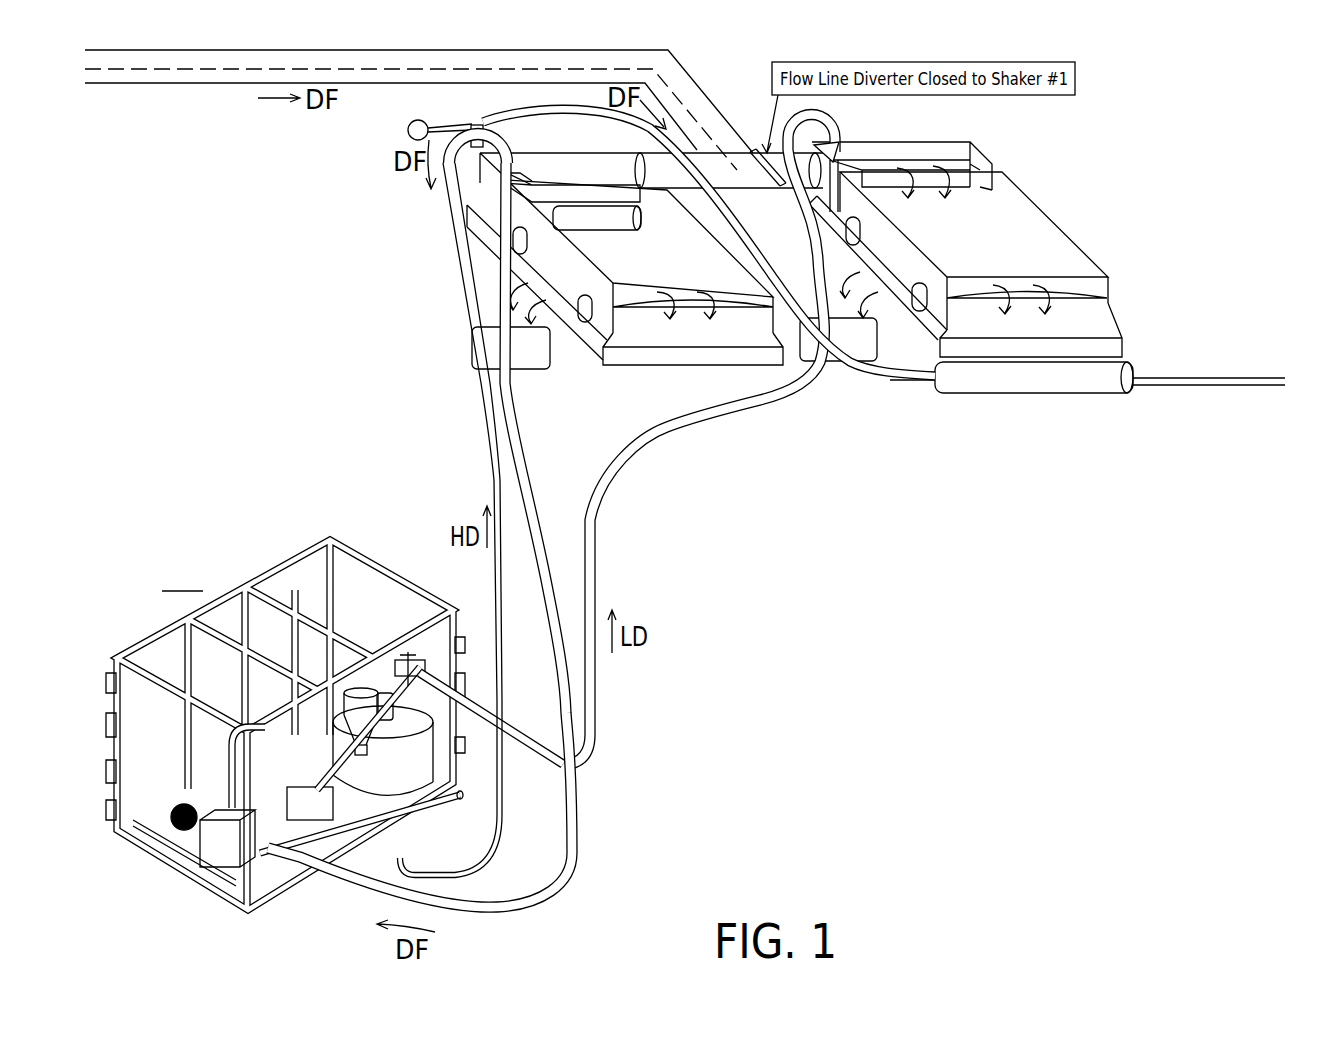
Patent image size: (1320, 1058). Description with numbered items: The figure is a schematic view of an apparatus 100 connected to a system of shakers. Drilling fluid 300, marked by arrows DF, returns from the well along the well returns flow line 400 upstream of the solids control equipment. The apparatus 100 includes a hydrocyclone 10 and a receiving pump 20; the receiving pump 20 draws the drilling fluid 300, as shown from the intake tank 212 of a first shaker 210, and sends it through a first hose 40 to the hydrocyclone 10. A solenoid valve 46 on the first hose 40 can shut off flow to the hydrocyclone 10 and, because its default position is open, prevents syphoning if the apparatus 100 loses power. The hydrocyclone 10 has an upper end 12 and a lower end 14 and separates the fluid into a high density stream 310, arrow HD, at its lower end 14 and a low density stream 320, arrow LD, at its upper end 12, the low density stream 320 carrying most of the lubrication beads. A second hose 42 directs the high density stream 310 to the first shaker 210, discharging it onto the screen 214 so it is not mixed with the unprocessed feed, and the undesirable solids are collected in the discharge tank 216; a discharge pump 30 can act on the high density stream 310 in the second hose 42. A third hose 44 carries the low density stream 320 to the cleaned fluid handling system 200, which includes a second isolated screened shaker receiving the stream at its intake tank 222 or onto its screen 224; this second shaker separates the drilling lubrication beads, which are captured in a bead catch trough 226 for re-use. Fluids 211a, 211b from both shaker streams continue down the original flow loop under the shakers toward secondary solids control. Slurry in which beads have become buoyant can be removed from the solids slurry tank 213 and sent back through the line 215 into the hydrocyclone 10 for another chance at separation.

The hydrocyclone 10 is at (362, 705).
The upper end 12 is at (357, 688).
The lower end 14 is at (413, 778).
The receiving pump 20 is at (215, 843).
The discharge pump 30 is at (318, 800).
The first hose 40 is at (572, 878).
The second hose 42 is at (494, 487).
The third hose 44 is at (600, 551).
The solenoid valve 46 is at (476, 126).
The apparatus 100 is at (385, 724).
The cleaned fluid handling system 200 is at (1047, 248).
The first shaker 210 is at (630, 290).
The fluid from processing shaker stream 211a is at (517, 350).
The fluid from processing shaker stream 211b is at (870, 343).
The intake tank 212 is at (620, 168).
The solids slurry tank 213 is at (400, 760).
The screen 214 is at (675, 255).
The line 215 is at (417, 790).
The discharge tank 216 is at (645, 335).
The intake tank 222 is at (893, 143).
The screen 224 is at (995, 230).
The bead catch trough 226 is at (1078, 327).
The drilling fluid 300 is at (200, 72).
The high density stream 310 is at (497, 596).
The low density stream 320 is at (603, 700).
The well returns flow line 400 is at (676, 56).